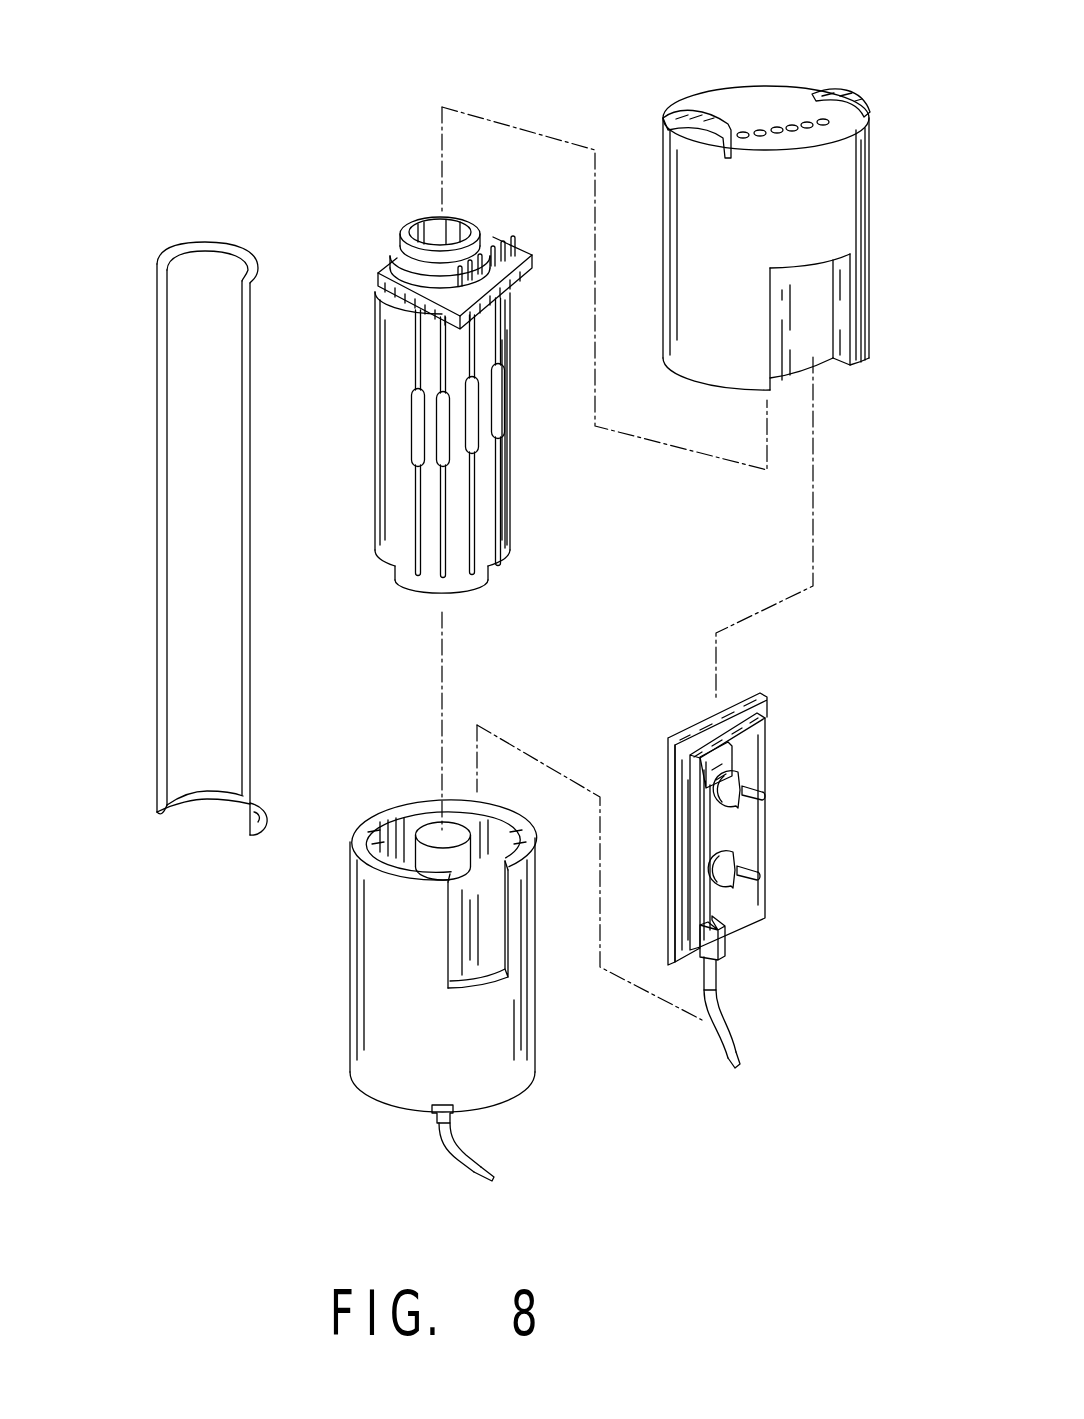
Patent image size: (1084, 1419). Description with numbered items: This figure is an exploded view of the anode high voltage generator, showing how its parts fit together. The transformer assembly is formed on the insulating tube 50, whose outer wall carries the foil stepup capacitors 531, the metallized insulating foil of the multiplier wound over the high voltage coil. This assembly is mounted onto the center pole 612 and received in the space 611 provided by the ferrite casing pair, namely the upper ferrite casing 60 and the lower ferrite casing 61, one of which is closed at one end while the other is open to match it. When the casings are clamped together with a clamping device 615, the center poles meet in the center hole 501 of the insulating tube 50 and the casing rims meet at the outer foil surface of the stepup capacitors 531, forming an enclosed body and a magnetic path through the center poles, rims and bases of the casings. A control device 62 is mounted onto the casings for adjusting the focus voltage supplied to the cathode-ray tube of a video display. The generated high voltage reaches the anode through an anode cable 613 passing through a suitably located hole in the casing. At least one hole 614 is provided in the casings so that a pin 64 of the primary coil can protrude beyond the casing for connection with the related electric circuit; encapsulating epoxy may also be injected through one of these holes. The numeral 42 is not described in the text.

The heating rods 42 is at (505, 431).
The insulating tube 50 is at (438, 238).
The center hole 501 is at (421, 213).
The foil stepup capacitors 531 is at (373, 401).
The upper ferrite casing 60 is at (766, 201).
The lower ferrite casing 61 is at (425, 985).
The space 611 is at (395, 805).
The center pole 612 is at (424, 820).
The anode cable 613 is at (456, 1167).
The hole 614 is at (810, 120).
The clamping device 615 is at (186, 248).
The control device 62 is at (757, 705).
The pin 64 is at (515, 251).